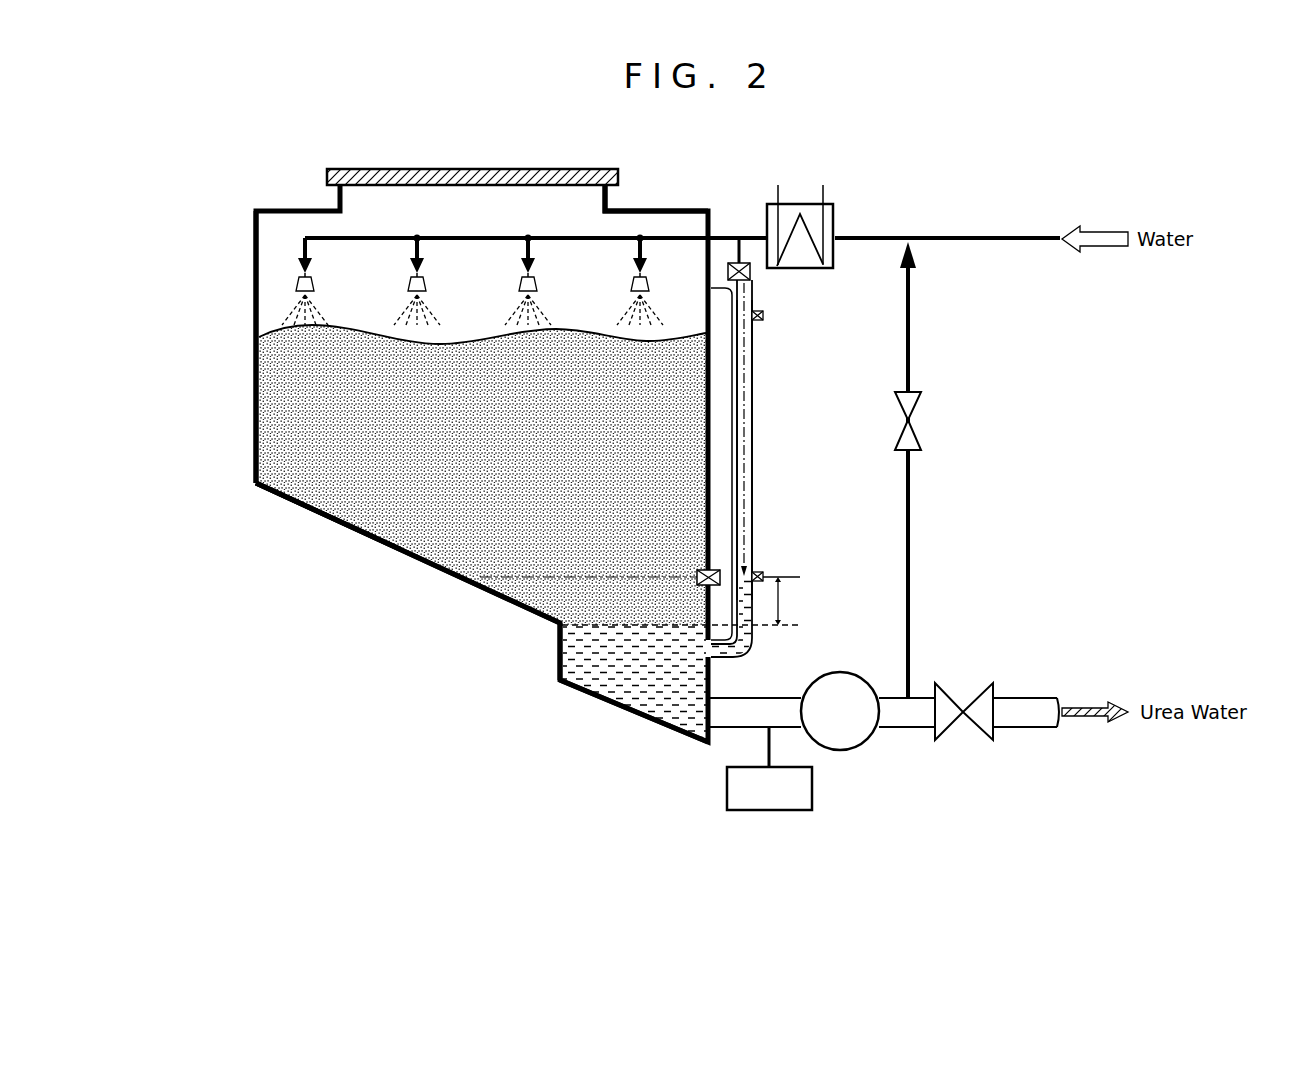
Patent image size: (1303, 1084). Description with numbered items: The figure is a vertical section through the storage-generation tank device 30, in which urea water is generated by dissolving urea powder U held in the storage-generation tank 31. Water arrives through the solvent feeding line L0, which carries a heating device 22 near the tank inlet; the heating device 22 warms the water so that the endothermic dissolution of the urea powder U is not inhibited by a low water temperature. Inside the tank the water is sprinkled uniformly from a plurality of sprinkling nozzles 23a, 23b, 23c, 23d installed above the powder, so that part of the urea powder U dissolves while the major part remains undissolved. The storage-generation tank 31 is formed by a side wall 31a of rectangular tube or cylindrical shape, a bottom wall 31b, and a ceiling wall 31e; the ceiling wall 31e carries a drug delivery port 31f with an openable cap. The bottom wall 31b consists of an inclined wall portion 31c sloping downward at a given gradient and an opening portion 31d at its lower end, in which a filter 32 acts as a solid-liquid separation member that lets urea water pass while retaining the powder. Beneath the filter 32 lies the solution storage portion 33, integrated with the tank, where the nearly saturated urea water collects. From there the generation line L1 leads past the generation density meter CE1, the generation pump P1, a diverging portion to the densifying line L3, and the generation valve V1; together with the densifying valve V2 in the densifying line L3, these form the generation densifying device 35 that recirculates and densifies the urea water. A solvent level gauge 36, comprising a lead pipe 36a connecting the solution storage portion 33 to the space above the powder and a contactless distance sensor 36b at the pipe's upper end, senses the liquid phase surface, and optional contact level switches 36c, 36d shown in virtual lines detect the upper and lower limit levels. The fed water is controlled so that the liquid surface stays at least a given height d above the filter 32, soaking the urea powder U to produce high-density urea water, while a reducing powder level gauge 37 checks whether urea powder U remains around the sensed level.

The heating device 22 is at (835, 205).
The sprinkling nozzle 23a is at (317, 283).
The sprinkling nozzle 23b is at (429, 283).
The sprinkling nozzle 23c is at (541, 283).
The sprinkling nozzle 23d is at (652, 283).
The storage-generation tank device 30 is at (1008, 435).
The storage-generation tank 31 is at (238, 266).
The side wall 31a is at (255, 405).
The bottom wall 31b is at (436, 582).
The inclined wall portion 31c is at (325, 517).
The opening portion 31d is at (556, 621).
The ceiling wall 31e is at (633, 210).
The drug delivery port 31f is at (605, 200).
The filter 32 is at (600, 627).
The solution storage portion 33 is at (630, 710).
The generation densifying device 35 is at (940, 336).
The solvent level gauge 36 is at (770, 447).
The lead pipe 36a is at (753, 498).
The contactless distance sensor 36b is at (752, 272).
The contact level switch 36c is at (765, 320).
The contact level switch 36d is at (760, 572).
The reducing powder level gauge 37 is at (716, 568).
The urea powder U is at (395, 505).
The given height d is at (786, 601).
The solvent feeding line L0 is at (1000, 238).
The generation line L1 is at (898, 725).
The densifying line L3 is at (912, 575).
The generation pump P1 is at (840, 711).
The generation valve V1 is at (955, 720).
The densifying valve V2 is at (918, 420).
The generation density meter CE1 is at (769, 768).